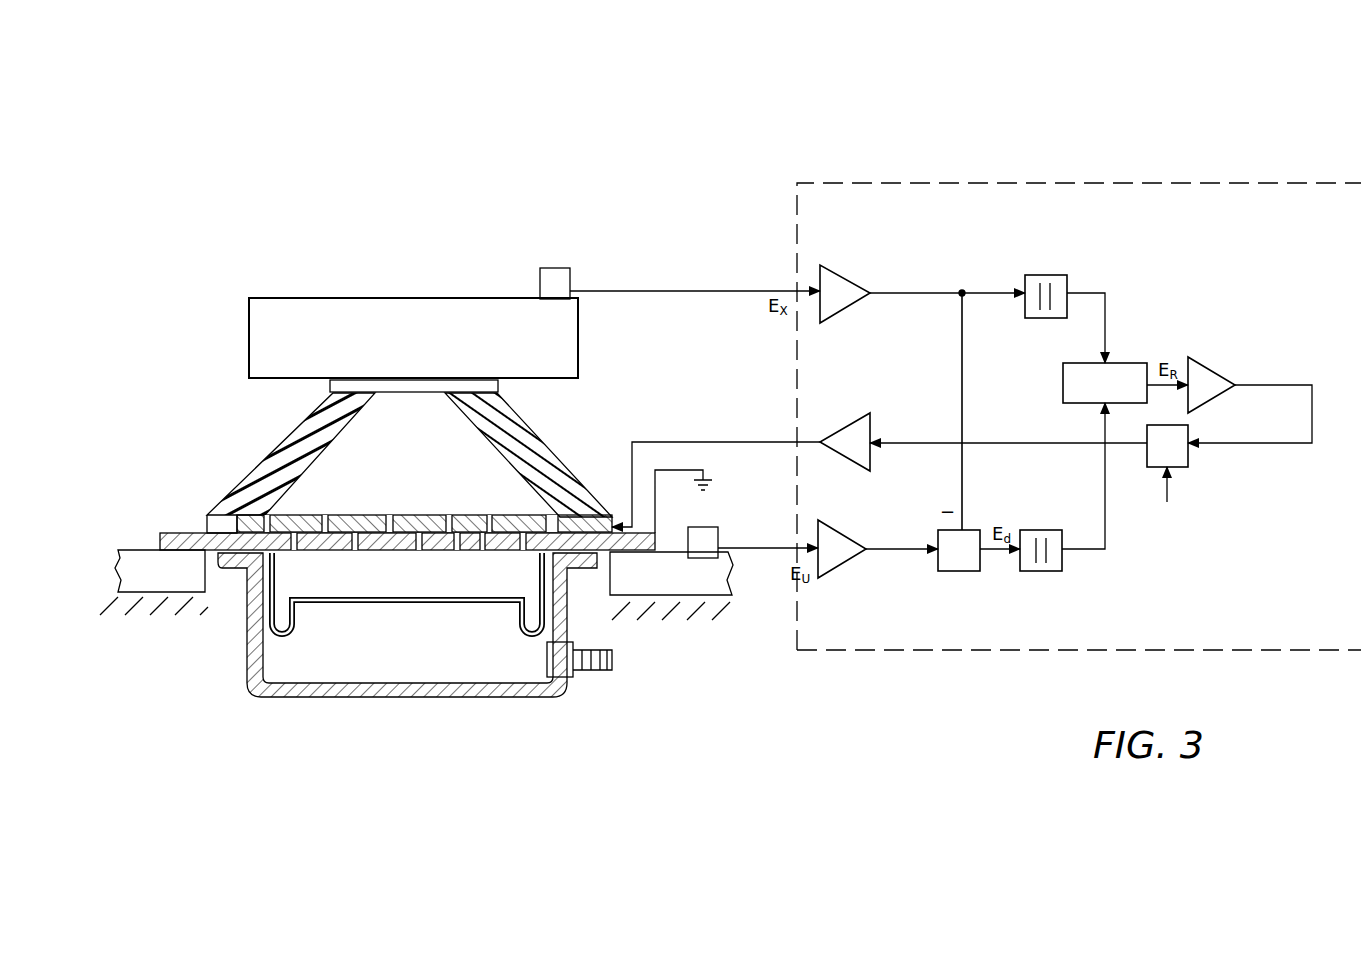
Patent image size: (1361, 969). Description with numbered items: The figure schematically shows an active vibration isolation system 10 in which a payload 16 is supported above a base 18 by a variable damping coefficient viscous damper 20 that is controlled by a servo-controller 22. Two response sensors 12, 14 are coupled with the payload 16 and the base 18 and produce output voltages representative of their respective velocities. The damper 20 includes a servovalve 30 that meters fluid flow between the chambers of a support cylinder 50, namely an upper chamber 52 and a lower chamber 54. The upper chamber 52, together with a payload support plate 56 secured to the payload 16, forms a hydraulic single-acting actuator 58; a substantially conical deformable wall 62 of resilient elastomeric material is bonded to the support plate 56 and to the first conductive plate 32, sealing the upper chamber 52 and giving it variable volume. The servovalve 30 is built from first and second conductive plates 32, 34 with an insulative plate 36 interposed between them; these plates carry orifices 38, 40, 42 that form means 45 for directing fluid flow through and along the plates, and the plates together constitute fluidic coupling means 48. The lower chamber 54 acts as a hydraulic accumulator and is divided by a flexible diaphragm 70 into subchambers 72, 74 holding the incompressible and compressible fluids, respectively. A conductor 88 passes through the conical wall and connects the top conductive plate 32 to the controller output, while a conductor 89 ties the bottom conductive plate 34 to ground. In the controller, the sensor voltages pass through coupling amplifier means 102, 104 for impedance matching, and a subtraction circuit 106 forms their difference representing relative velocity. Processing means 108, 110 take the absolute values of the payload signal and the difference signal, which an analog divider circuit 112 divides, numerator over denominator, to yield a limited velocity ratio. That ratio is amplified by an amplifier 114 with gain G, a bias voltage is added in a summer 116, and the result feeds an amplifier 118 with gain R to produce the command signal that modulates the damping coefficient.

The active vibration isolation system 10 is at (733, 192).
The response sensor 12 is at (565, 268).
The response sensor 14 is at (718, 527).
The payload 16 is at (338, 298).
The base 18 is at (160, 543).
The variable damping coefficient viscous damper 20 is at (195, 410).
The servo-controller 22 is at (1186, 183).
The servovalve 30 is at (300, 557).
The first conductive plate 32 is at (485, 512).
The second conductive plate 34 is at (505, 540).
The insulative plate 36 is at (485, 543).
The orifices of first conductive plate 38 is at (327, 515).
The orifices of second conductive plate 40 is at (528, 543).
The orifices of insulative plate 42 is at (400, 542).
The means for directing fluid flow 45 is at (266, 516).
The fluidic coupling means 48 is at (397, 515).
The support cylinder 50 is at (305, 460).
The upper chamber 52 is at (424, 426).
The lower chamber 54 is at (410, 662).
The payload support plate 56 is at (330, 387).
The hydraulic single-acting actuator 58 is at (500, 386).
The conical deformable wall 62 is at (240, 470).
The diaphragm 70 is at (548, 622).
The subchamber 72 is at (340, 589).
The subchamber 74 is at (340, 633).
The conductor 88 is at (655, 442).
The conductor 89 is at (657, 512).
The coupling amplifier means 102 is at (848, 280).
The coupling amplifier means 104 is at (850, 558).
The subtraction circuit 106 is at (950, 571).
The absolute value processing means 108 is at (1060, 273).
The absolute value processing means 110 is at (1047, 573).
The analog divider circuit 112 is at (1125, 363).
The amplifier 114 is at (1213, 367).
The summer 116 is at (1190, 466).
The amplifier 118 is at (840, 430).